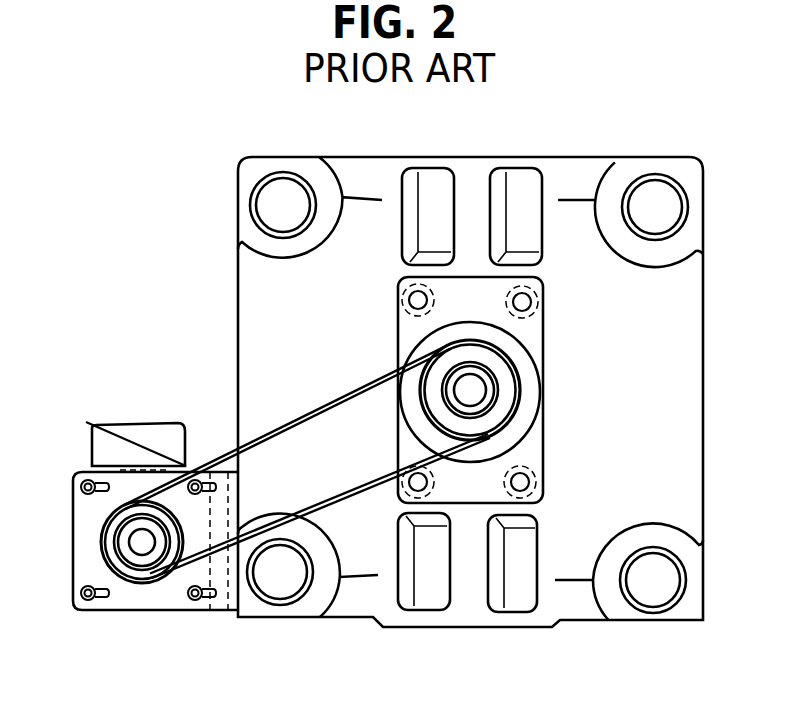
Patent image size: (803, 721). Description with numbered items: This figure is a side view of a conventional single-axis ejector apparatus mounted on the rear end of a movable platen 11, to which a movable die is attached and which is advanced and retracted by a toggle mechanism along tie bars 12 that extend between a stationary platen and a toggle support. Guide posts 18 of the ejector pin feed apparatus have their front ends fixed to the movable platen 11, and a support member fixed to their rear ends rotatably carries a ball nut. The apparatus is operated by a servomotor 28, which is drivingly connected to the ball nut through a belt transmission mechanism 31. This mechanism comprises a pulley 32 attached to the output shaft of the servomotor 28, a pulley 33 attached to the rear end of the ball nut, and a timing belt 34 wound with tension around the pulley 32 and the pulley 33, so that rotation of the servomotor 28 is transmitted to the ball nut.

The movable platen 11 is at (255, 313).
The tie bars 12 is at (666, 195).
The guide posts 18 is at (538, 303).
The servomotor 28 is at (78, 476).
The belt transmission mechanism 31 is at (358, 366).
The pulley 32 is at (153, 578).
The pulley 33 is at (518, 379).
The timing belt 34 is at (367, 494).